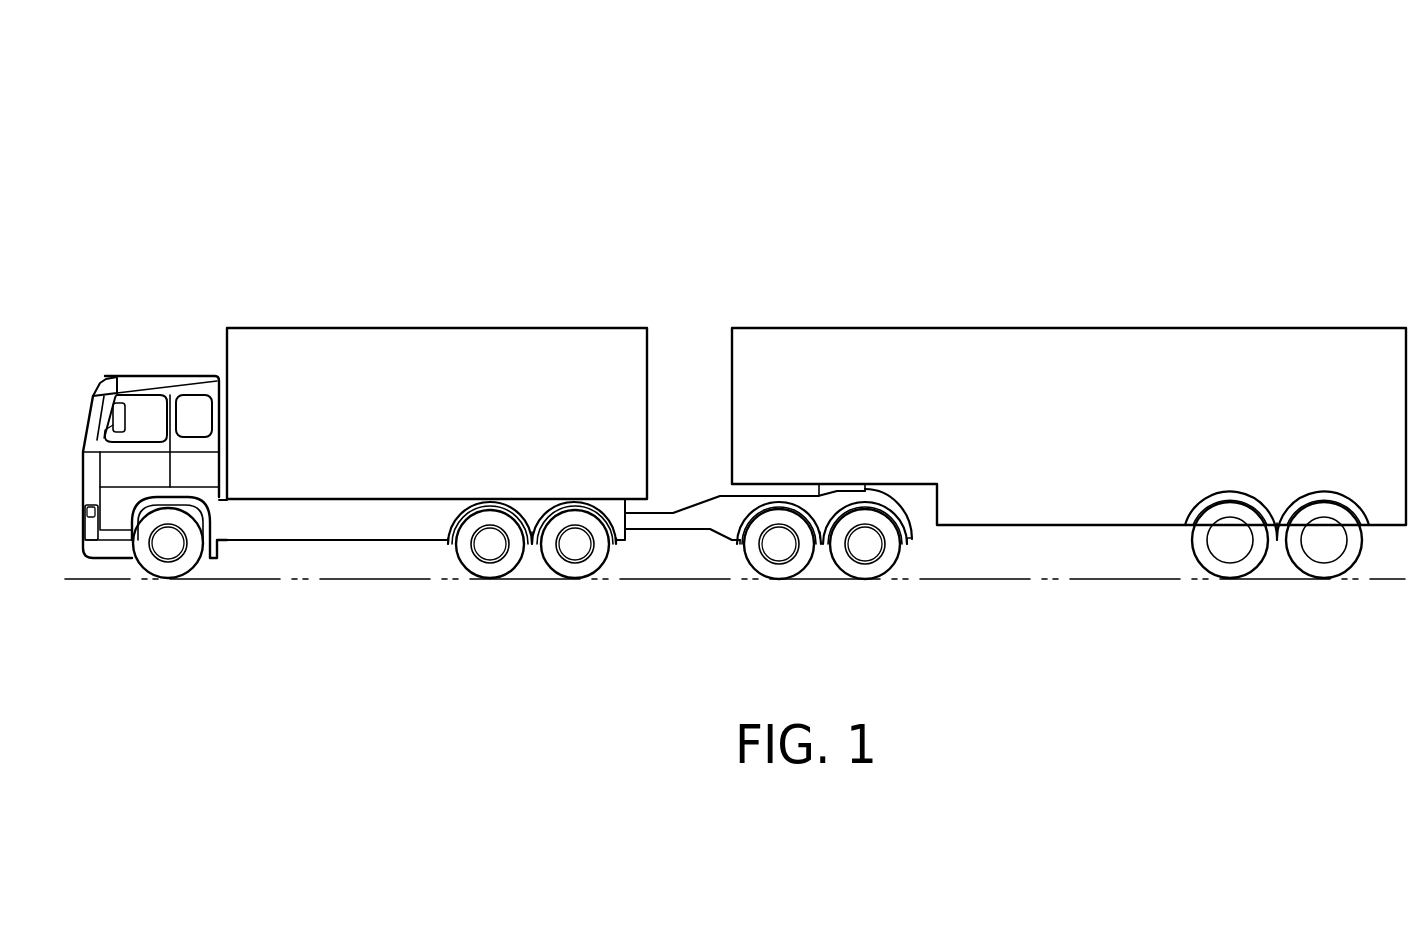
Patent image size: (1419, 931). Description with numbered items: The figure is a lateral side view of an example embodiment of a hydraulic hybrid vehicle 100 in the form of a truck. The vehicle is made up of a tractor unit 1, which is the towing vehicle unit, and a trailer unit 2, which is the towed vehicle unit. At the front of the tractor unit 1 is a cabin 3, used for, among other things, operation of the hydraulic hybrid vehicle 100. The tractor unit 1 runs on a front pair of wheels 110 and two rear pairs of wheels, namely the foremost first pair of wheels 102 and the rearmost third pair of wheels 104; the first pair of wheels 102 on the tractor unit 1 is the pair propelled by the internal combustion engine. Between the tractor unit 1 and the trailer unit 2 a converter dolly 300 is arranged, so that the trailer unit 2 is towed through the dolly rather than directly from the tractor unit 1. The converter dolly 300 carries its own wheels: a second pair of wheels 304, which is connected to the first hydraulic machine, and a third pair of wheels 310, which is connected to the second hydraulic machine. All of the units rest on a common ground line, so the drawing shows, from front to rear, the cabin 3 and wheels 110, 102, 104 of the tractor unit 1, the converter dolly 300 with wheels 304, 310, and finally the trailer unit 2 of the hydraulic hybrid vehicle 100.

The hydraulic hybrid vehicle 100 is at (735, 384).
The tractor unit 1 is at (359, 466).
The trailer unit 2 is at (1122, 357).
The cabin 3 is at (130, 475).
The first pair of wheels 102 is at (492, 548).
The third pair of wheels 104 is at (575, 548).
The front pair of wheels 110 is at (168, 548).
The converter dolly 300 is at (757, 570).
The second pair of wheels 304 is at (781, 548).
The third pair of wheels 310 is at (868, 548).